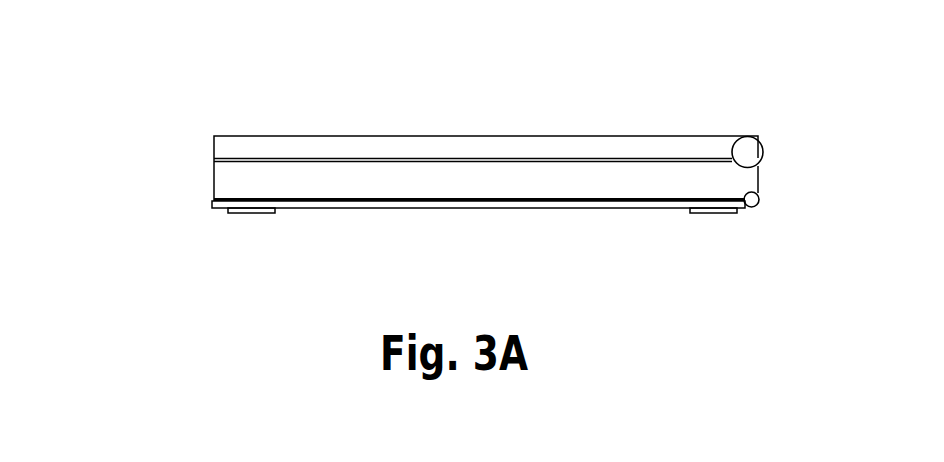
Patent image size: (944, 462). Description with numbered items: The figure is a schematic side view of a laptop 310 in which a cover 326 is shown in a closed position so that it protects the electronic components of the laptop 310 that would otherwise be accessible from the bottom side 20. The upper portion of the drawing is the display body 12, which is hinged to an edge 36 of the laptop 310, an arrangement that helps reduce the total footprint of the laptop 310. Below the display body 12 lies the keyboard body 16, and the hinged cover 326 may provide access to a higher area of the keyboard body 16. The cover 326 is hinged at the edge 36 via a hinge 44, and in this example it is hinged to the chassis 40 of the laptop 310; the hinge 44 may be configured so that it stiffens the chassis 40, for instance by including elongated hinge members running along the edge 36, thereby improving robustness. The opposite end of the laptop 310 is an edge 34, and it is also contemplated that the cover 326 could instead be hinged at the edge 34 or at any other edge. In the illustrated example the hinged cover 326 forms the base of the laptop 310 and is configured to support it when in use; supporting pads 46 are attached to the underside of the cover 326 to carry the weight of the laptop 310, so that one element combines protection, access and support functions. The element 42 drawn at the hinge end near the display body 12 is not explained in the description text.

The computing device 310 is at (548, 71).
The display assembly 16 is at (129, 177).
The display housing 12 is at (255, 150).
The display panel layer 34 is at (214, 184).
The base housing 40 is at (338, 192).
The base assembly 20 is at (196, 250).
The bottom plate 326 is at (384, 208).
The feet 46 is at (242, 213).
The hinge assembly 44 is at (792, 209).
The hinge barrel 42 is at (750, 146).
The hinge pin 36 is at (758, 178).